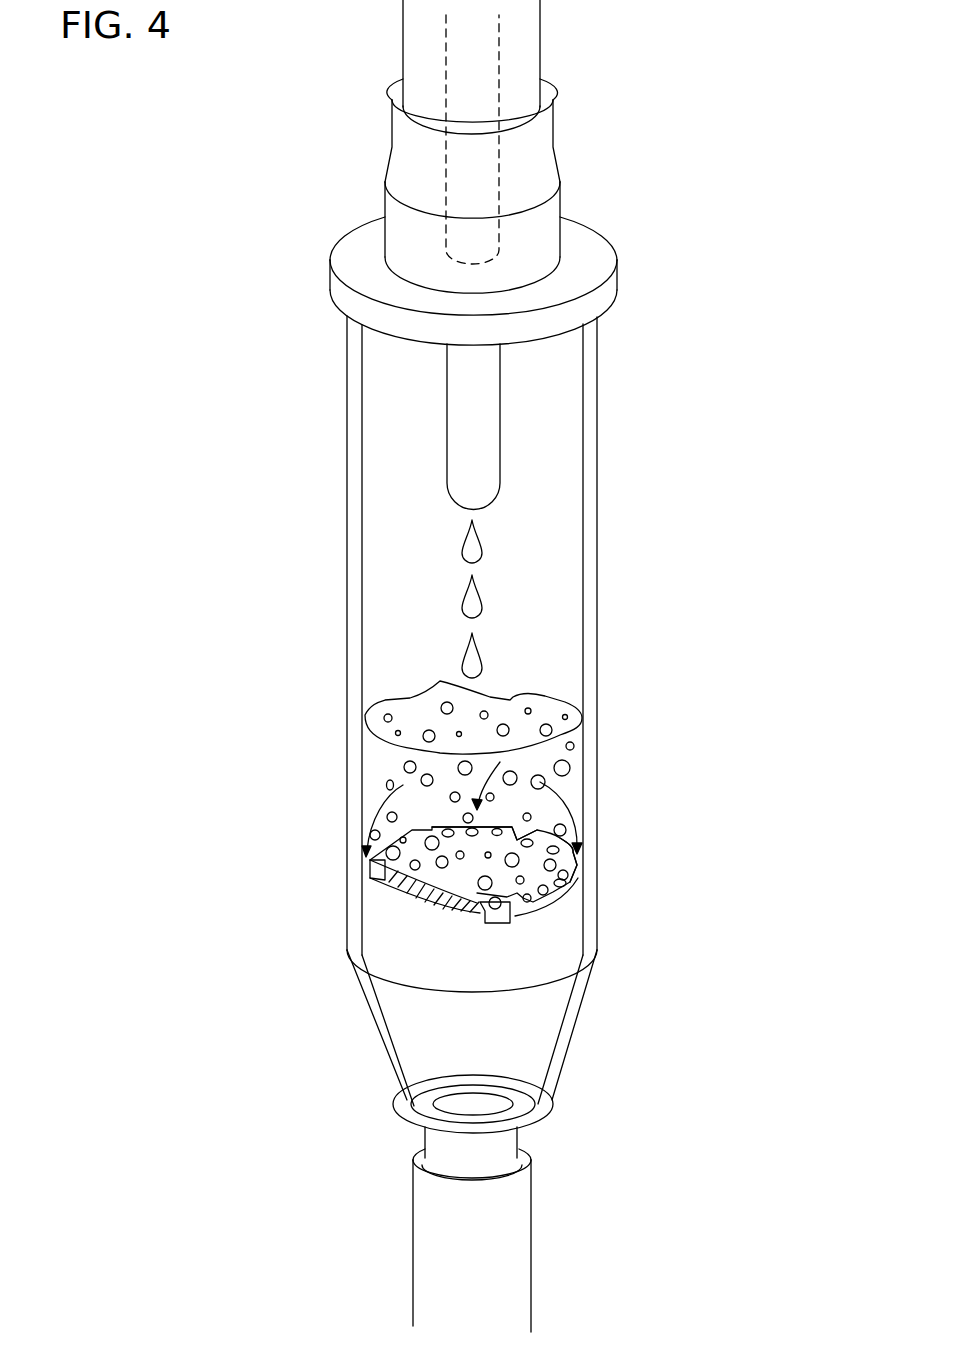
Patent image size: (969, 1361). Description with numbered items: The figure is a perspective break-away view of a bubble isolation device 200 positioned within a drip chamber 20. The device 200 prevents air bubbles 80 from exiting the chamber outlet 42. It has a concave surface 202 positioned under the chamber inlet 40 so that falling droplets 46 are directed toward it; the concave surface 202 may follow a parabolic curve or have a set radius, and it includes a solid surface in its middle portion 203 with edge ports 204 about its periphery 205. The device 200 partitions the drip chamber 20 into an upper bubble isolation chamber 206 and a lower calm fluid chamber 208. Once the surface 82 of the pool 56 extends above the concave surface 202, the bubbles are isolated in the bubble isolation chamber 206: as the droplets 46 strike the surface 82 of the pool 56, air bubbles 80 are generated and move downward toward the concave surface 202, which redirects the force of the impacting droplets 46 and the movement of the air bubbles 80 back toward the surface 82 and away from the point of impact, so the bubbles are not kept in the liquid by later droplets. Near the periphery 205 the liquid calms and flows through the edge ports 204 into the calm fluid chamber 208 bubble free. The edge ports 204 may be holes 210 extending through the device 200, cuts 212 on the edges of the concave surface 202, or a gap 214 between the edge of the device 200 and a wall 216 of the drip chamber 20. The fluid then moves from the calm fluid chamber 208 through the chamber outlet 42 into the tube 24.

The drip chamber 20 is at (421, 666).
The wall 216 is at (363, 518).
The chamber inlet 40 is at (478, 432).
The droplets 46 is at (465, 605).
The surface of the pool 82 is at (512, 697).
The pool 56 is at (452, 674).
The air bubbles 80 is at (576, 746).
The bubble isolation chamber 206 is at (380, 758).
The concave surface 202 is at (522, 810).
The middle portion 203 is at (477, 867).
The gap 214 is at (580, 875).
The bubble isolation device 200 is at (464, 907).
The periphery 205 is at (450, 867).
The edge ports 204 is at (418, 899).
The holes 210 is at (545, 888).
The cuts 212 is at (517, 900).
The chamber outlet 42 is at (458, 1114).
The calm fluid chamber 208 is at (418, 1028).
The tube 24 is at (497, 1258).